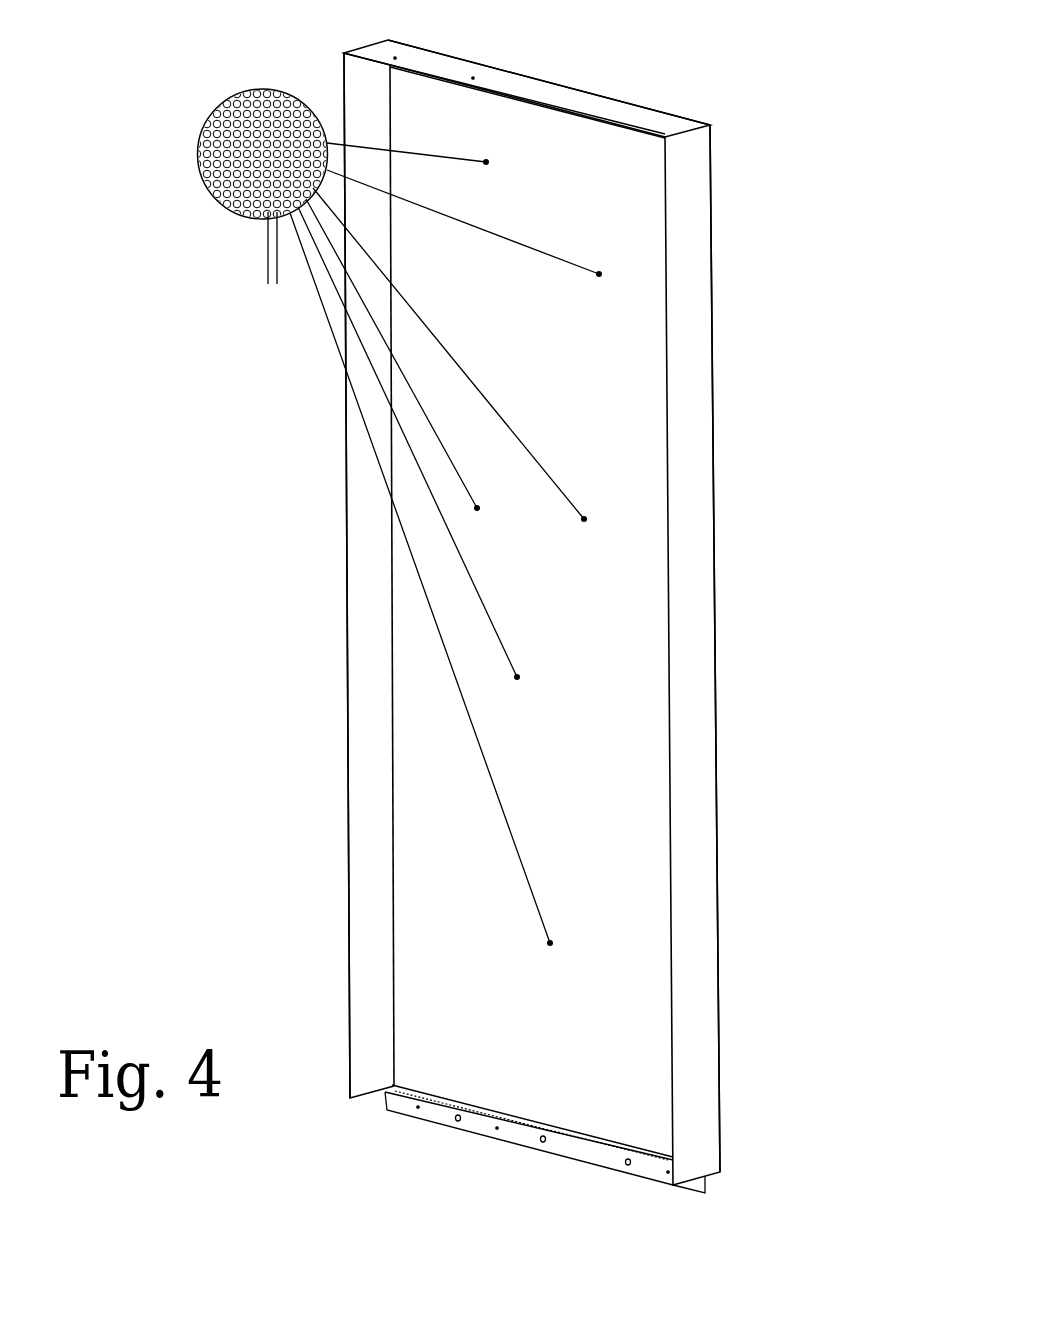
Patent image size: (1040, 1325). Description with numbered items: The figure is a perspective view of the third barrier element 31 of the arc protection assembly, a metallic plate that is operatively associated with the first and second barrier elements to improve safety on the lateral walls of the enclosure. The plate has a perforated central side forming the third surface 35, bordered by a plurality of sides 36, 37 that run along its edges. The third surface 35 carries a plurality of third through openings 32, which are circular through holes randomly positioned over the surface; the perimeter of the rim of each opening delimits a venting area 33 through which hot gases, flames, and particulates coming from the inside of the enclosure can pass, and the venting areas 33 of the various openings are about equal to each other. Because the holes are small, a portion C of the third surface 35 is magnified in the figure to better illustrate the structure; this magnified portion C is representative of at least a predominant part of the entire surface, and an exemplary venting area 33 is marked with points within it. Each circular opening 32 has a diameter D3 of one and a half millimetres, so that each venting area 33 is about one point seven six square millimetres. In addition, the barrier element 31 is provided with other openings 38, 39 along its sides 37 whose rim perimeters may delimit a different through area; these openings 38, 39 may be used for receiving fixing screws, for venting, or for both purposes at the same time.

The third barrier element 31 is at (498, 607).
The third through openings 32 is at (302, 103).
The venting area 33 is at (242, 107).
The third surface 35 is at (600, 347).
The sides 36 is at (700, 578).
The sides 37 is at (518, 88).
The openings 38 is at (643, 125).
The openings 39 is at (455, 1117).
The magnified portion C is at (519, 176).
The diameter D3 is at (300, 279).